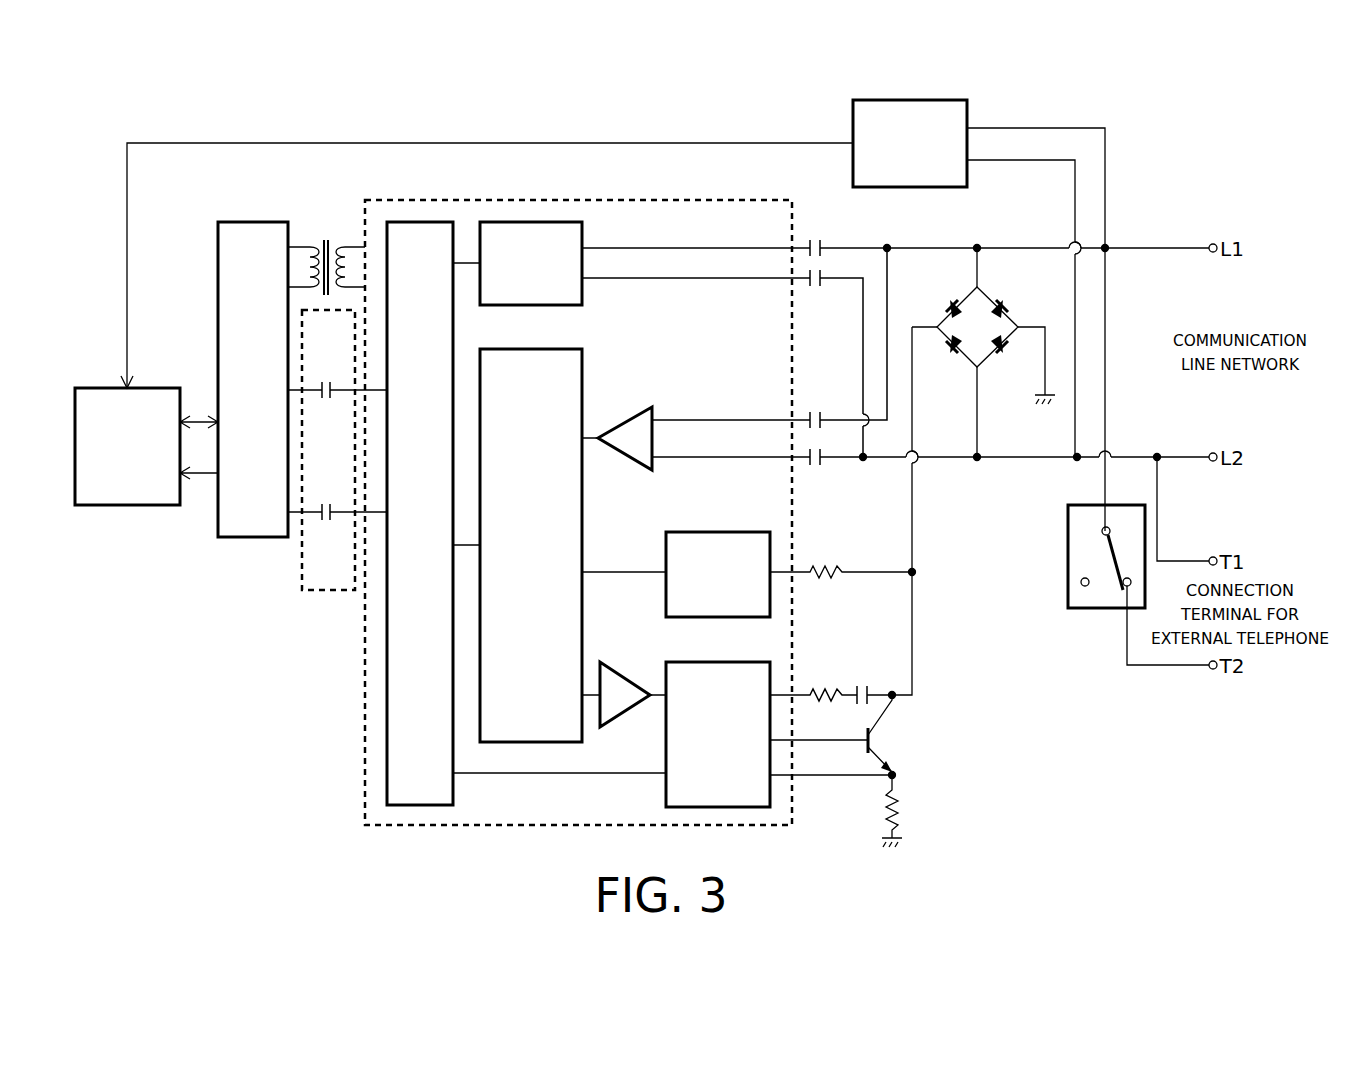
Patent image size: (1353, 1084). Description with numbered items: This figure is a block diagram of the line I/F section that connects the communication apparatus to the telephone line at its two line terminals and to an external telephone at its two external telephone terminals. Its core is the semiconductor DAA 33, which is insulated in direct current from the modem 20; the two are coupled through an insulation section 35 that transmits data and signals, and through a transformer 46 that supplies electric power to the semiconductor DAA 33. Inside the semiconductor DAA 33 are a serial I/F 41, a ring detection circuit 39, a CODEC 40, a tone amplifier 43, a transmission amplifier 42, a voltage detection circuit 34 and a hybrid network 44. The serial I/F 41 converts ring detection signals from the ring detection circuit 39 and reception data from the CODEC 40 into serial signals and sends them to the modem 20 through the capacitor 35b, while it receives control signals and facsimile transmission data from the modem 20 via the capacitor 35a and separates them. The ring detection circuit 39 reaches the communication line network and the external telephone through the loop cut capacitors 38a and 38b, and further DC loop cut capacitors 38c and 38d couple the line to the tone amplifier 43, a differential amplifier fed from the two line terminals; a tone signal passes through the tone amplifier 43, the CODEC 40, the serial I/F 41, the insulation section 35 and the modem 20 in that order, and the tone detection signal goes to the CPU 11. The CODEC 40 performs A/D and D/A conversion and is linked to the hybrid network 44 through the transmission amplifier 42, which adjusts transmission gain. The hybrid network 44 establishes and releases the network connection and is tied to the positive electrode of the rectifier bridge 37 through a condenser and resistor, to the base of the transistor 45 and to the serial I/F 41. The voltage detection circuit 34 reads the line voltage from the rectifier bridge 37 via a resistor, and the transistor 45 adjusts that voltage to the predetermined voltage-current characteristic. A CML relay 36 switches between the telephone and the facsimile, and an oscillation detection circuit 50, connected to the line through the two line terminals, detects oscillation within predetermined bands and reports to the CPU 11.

The CPU 11 is at (122, 508).
The modem 20 is at (262, 222).
The transformer 46 is at (320, 238).
The semiconductor DAA 33 is at (658, 200).
The insulation section 35 is at (337, 482).
The capacitor 35a is at (330, 380).
The capacitor 35b is at (330, 503).
The serial I/F 41 is at (453, 331).
The ring detection circuit 39 is at (582, 292).
The CODEC 40 is at (582, 520).
The tone amplifier 43 is at (628, 418).
The transmission amplifier 42 is at (630, 668).
The voltage detection circuit 34 is at (729, 532).
The hybrid network 44 is at (729, 662).
The transistor 45 is at (895, 742).
The DC loop cut capacitor 38a is at (816, 240).
The DC loop cut capacitor 38b is at (816, 290).
The DC loop cut capacitor 38c is at (816, 412).
The DC loop cut capacitor 38d is at (816, 470).
The rectifier bridge 37 is at (1010, 296).
The oscillation detection circuit 50 is at (853, 115).
The CML relay 36 is at (1093, 560).